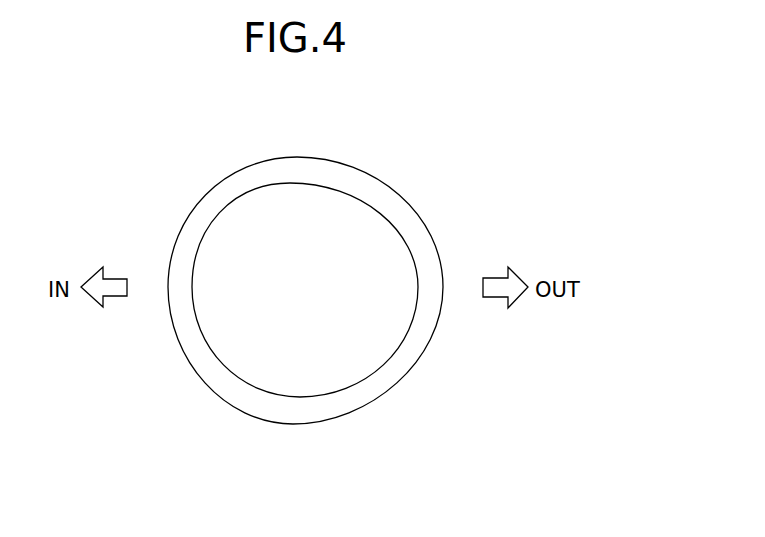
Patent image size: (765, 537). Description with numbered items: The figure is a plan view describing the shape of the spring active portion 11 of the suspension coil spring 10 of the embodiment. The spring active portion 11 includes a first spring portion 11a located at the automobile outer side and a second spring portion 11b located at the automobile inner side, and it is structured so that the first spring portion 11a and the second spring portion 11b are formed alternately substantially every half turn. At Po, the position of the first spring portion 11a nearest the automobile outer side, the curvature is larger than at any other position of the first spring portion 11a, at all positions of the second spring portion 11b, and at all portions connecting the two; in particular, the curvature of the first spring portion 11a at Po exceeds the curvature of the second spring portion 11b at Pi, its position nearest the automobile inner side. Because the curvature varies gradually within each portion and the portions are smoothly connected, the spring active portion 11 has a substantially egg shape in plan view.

The suspension coil spring 10 is at (224, 135).
The spring active portion 11 is at (395, 189).
The first spring portion 11a is at (423, 328).
The second spring portion 11b is at (183, 327).
The position located most near automobile inner side Pi is at (177, 281).
The position located most near automobile outer side Po is at (433, 280).